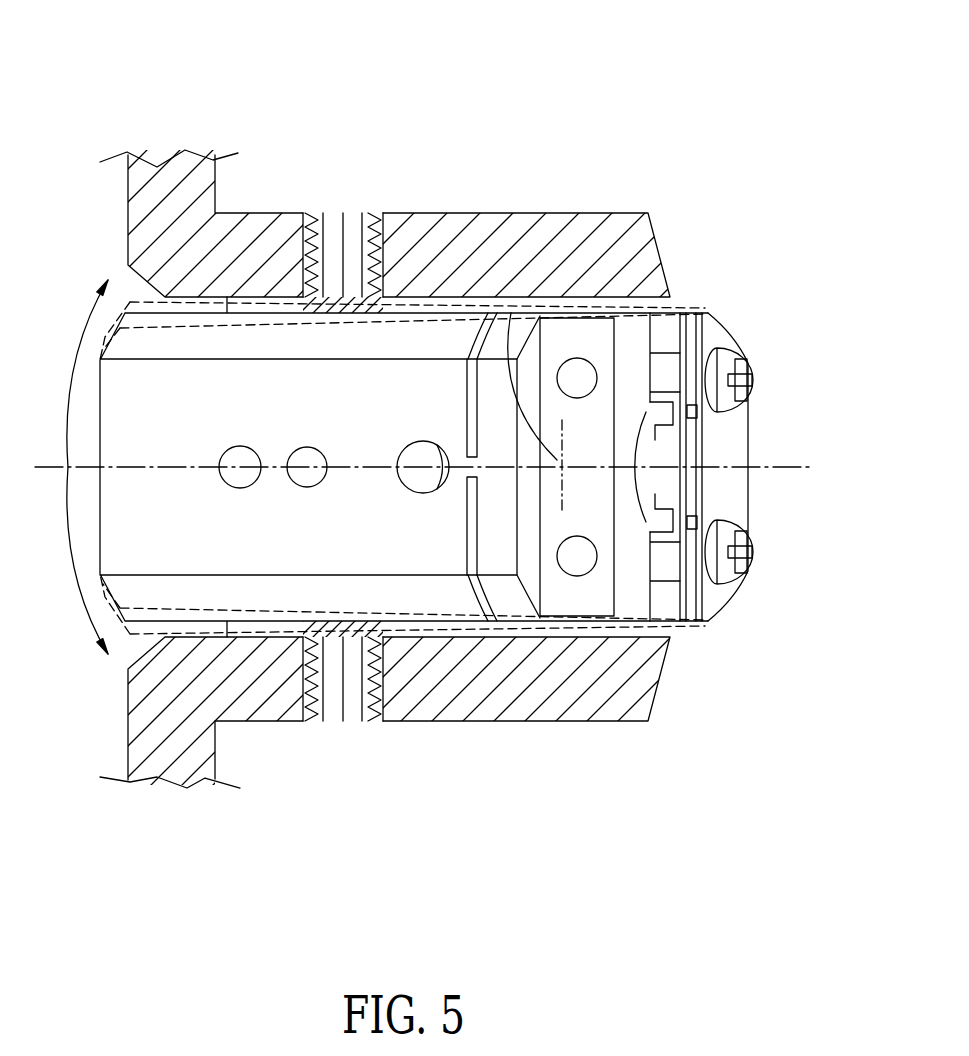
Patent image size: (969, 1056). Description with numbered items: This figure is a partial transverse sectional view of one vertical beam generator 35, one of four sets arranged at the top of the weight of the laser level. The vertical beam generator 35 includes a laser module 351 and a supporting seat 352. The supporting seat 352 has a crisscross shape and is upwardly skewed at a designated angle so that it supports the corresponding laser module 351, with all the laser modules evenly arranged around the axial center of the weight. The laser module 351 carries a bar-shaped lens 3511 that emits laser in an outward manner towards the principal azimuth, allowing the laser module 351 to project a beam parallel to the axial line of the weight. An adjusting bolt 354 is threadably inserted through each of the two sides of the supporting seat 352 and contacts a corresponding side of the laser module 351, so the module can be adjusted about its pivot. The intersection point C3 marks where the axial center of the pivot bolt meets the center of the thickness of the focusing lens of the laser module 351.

The vertical beam generator 35 is at (465, 125).
The laser module 351 is at (730, 441).
The bar-shaped lens 3511 is at (668, 487).
The supporting seat 352 is at (587, 222).
The adjusting bolt 354 is at (353, 222).
The intersection point C3 is at (511, 313).